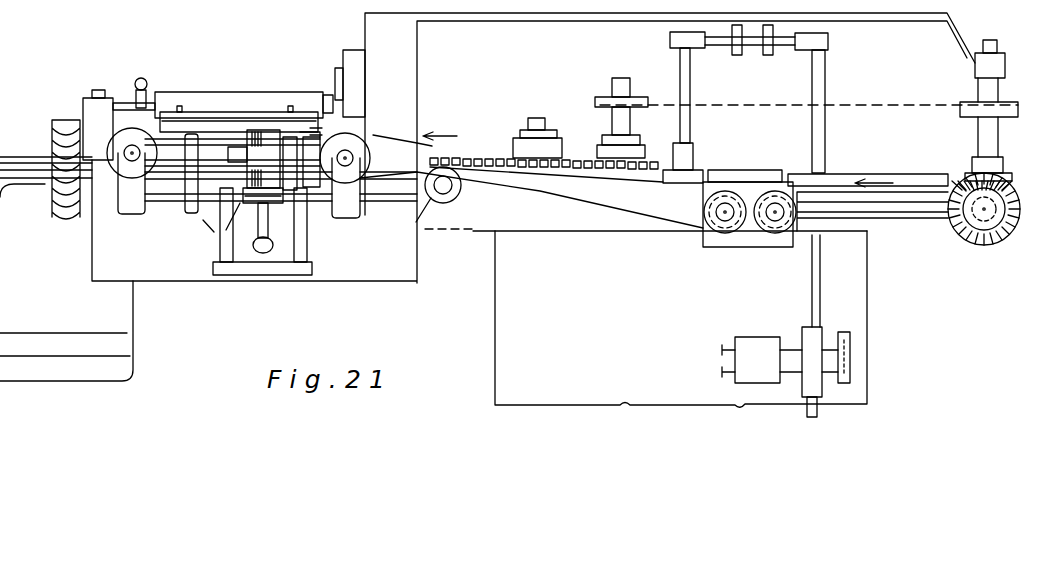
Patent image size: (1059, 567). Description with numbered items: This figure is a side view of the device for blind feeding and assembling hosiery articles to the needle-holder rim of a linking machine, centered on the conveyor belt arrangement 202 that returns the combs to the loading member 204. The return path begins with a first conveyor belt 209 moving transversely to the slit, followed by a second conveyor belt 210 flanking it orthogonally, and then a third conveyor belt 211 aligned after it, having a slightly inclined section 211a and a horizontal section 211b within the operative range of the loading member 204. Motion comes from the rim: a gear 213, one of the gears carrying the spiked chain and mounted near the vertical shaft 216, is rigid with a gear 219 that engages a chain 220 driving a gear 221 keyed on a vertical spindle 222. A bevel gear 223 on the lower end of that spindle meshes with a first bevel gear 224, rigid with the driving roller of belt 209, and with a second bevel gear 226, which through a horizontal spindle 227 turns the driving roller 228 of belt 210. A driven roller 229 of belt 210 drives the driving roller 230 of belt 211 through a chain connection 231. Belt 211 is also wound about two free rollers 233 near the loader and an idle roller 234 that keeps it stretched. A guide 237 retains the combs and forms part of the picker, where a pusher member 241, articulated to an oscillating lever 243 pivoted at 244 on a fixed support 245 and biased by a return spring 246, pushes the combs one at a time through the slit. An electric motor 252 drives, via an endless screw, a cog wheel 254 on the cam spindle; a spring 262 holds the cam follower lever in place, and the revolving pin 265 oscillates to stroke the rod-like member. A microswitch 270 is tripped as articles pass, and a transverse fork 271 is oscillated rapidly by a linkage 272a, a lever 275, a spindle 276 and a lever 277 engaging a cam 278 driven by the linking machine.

The conveyor belt arrangement 202 is at (920, 257).
The loading member 204 is at (214, 301).
The first conveyor belt 209 is at (835, 176).
The second conveyor belt 210 is at (883, 236).
The third conveyor belt 211 is at (548, 198).
The inclined section 211a is at (469, 147).
The horizontal section 211b is at (334, 98).
The gear 213 is at (593, 152).
The vertical shaft 216 is at (530, 128).
The gear 219 is at (607, 93).
The chain 220 is at (710, 104).
The gear 221 is at (977, 100).
The vertical spindle 222 is at (977, 127).
The bevel gear 223 is at (968, 167).
The first bevel gear 224 is at (950, 176).
The second bevel gear 226 is at (1005, 244).
The horizontal spindle 227 is at (968, 234).
The driving roller 228 is at (985, 232).
The driven roller 229 is at (770, 244).
The driving roller 230 is at (703, 254).
The chain connection 231 is at (735, 244).
The rollers 233 is at (116, 212).
The idle roller 234 is at (450, 190).
The guide 237 is at (262, 96).
The pusher member 241 is at (200, 111).
The oscillating lever 243 is at (238, 278).
The pivot 244 is at (195, 225).
The fixed support 245 is at (310, 248).
The return spring 246 is at (284, 276).
The electric motor 252 is at (120, 314).
The cog wheel 254 is at (52, 124).
The spring 262 is at (139, 78).
The revolving pin 265 is at (98, 88).
The microswitch 270 is at (355, 78).
The transverse fork 271 is at (673, 196).
The linkage 272a is at (693, 158).
The lever 275 is at (678, 70).
The spindle 276 is at (781, 43).
The lever 277 is at (825, 80).
The cam 278 is at (808, 340).